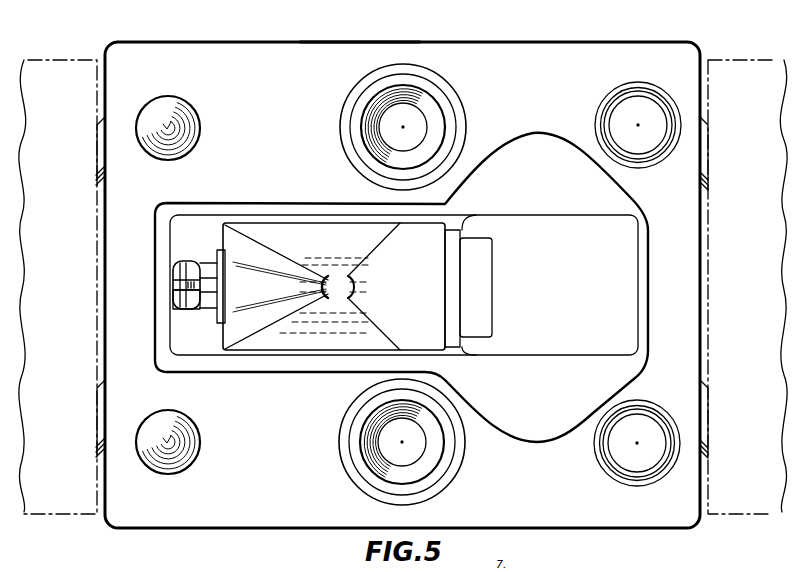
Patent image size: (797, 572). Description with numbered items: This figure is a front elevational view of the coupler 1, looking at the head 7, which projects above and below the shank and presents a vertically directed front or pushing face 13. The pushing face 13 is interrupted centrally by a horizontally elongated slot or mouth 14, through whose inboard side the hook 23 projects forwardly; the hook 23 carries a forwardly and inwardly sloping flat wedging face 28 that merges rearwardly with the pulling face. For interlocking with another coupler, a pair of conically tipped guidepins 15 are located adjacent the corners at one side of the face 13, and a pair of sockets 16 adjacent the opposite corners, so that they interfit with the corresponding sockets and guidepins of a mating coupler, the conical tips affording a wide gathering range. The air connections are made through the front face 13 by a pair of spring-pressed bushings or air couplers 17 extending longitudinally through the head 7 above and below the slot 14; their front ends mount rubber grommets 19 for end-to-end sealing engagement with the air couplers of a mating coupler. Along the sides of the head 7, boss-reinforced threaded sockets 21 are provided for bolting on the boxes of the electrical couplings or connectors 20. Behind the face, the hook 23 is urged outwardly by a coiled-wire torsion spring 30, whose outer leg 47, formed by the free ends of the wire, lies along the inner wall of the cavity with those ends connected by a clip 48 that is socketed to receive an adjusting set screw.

The coupler 1 is at (402, 274).
The head 7 is at (363, 43).
The front or pushing face 13 is at (284, 136).
The slot, opening or mouth 14 is at (498, 350).
The guidepins 15 is at (199, 128).
The sockets 16 is at (646, 102).
The spring-pressed bushings or air couplers 17 is at (400, 284).
The rubber grommets 19 is at (440, 120).
The electrical couplings or connectors 20 is at (59, 67).
The boss-reinforced threaded sockets 21 is at (100, 151).
The hook 23 is at (321, 237).
The wedging or front face 28 is at (412, 295).
The spring 30 is at (161, 294).
The outer leg 47 is at (186, 310).
The clip 48 is at (207, 262).